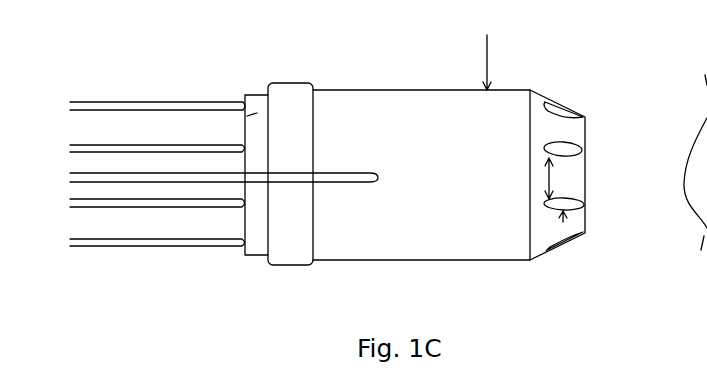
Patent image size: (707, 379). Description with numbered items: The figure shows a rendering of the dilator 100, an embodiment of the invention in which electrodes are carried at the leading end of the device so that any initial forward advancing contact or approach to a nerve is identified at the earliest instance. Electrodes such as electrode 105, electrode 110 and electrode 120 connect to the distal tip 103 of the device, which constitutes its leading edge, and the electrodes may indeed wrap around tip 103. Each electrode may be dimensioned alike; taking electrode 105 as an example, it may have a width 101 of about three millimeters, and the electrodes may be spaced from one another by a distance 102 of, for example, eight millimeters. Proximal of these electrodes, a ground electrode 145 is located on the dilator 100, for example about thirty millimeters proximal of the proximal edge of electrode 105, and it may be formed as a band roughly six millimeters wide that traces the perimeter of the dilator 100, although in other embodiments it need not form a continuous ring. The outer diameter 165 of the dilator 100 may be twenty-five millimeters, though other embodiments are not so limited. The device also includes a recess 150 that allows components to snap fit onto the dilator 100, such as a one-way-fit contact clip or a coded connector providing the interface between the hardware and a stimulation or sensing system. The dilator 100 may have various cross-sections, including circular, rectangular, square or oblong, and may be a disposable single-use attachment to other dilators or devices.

The dilator 100 is at (222, 69).
The ground electrode 145 is at (287, 97).
The recess 150 is at (337, 175).
The outer diameter 165 is at (484, 271).
The electrode 105 is at (567, 106).
The distance 102 is at (568, 160).
The width 101 is at (567, 190).
The distal tip 103 is at (591, 244).
The electrode 120 is at (694, 196).
The electrode 110 is at (701, 65).